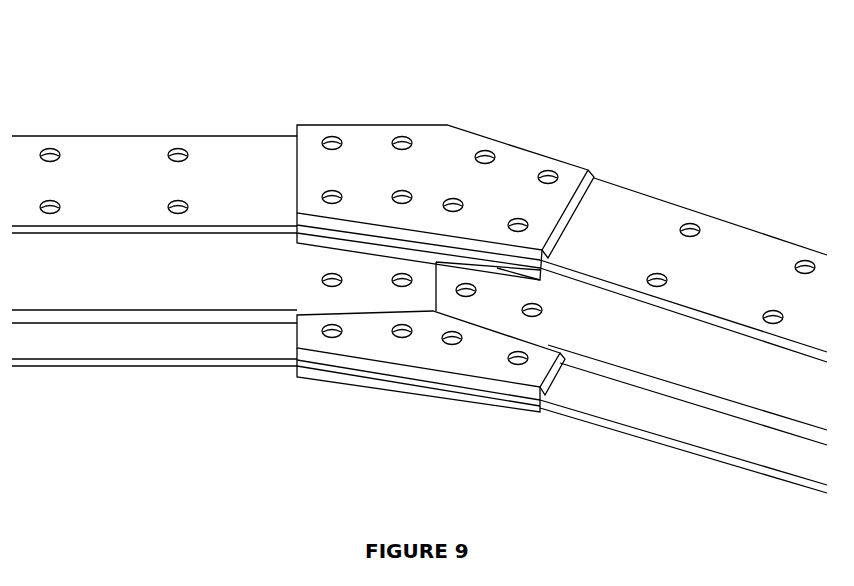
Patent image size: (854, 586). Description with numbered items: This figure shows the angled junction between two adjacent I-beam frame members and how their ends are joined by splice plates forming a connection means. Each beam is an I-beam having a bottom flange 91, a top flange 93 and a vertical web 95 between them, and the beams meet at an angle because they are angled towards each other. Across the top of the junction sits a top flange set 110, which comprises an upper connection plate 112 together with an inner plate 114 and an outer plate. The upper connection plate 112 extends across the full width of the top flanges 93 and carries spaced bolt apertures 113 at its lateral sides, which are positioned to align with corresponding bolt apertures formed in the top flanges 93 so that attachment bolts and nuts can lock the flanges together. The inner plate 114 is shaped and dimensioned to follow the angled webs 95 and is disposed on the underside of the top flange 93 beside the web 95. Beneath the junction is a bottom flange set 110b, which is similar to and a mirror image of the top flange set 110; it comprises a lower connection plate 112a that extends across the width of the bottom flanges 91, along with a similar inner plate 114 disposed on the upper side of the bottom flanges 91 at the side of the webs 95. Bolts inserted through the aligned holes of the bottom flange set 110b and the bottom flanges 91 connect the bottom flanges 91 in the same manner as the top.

The bottom flange 91 is at (68, 342).
The top flange 93 is at (128, 187).
The vertical web 95 is at (142, 280).
The top flange set 110 is at (470, 255).
The bottom flange set 110b is at (387, 411).
The upper connection plate 112 is at (517, 172).
The lower connection plate 112a is at (442, 395).
The bolt apertures 113 is at (328, 192).
The inner plate 114 is at (497, 268).